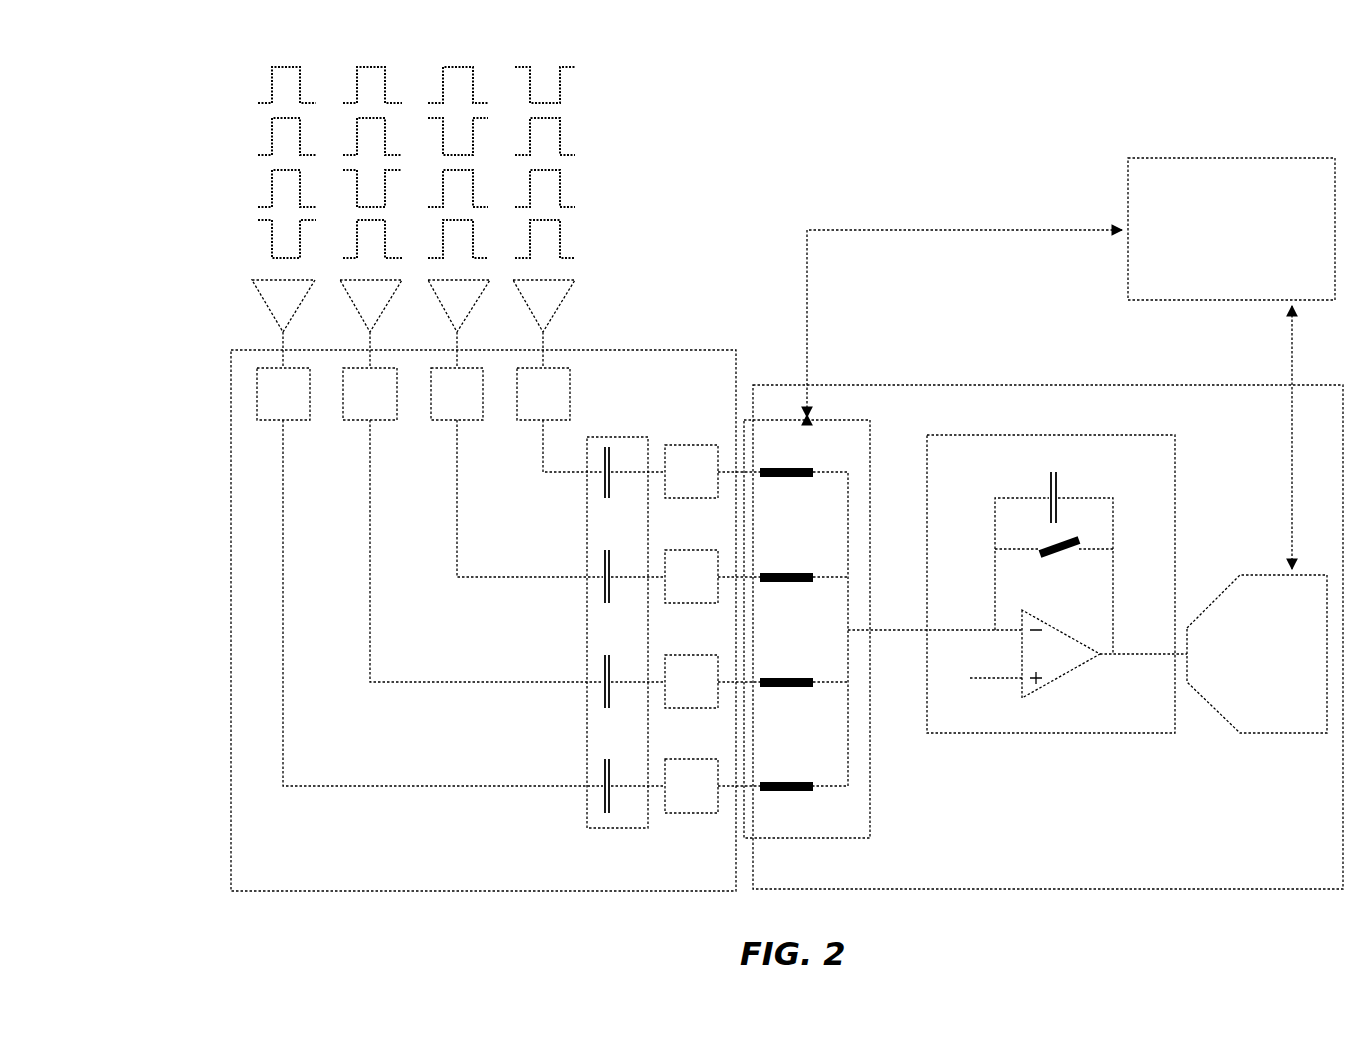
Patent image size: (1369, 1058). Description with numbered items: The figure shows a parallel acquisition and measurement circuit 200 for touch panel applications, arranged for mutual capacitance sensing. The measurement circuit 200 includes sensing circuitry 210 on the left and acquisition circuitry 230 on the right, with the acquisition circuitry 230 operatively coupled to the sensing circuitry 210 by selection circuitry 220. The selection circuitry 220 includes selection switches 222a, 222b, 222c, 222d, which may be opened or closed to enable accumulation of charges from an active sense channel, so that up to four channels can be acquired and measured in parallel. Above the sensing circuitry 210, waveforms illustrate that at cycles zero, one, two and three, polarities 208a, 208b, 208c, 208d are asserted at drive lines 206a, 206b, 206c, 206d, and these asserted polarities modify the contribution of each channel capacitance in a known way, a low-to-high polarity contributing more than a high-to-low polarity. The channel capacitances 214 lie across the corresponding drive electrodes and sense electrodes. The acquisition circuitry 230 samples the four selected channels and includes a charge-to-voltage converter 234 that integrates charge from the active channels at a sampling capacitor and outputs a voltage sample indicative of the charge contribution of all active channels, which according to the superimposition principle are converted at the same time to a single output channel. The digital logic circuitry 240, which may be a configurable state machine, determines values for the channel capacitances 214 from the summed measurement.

The parallel acquisition and measurement circuit 200 is at (1050, 152).
The polarity 208a is at (382, 86).
The polarity 208b is at (382, 137).
The polarity 208c is at (382, 189).
The polarity 208d is at (382, 240).
The drive line 206a is at (543, 394).
The drive line 206b is at (457, 394).
The drive line 206c is at (370, 394).
The drive line 206d is at (283, 394).
The sensing circuitry 210 is at (495, 620).
The channel capacitances 214 is at (587, 506).
The selection circuitry 220 is at (883, 635).
The selection switch 222a is at (796, 456).
The selection switch 222b is at (796, 561).
The selection switch 222c is at (795, 666).
The selection switch 222d is at (796, 771).
The acquisition circuitry 230 is at (1043, 559).
The charge-to-voltage converter 234 is at (925, 436).
The digital logic circuitry 240 is at (1231, 229).